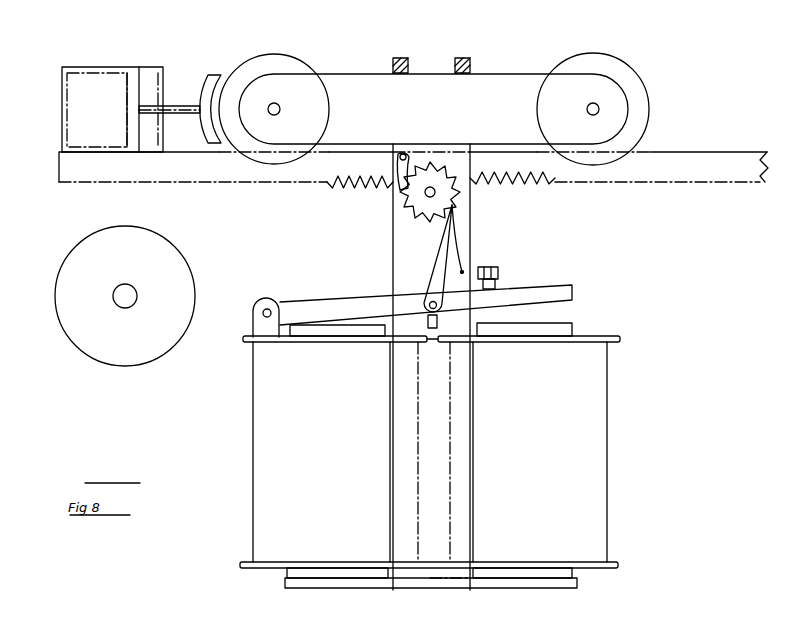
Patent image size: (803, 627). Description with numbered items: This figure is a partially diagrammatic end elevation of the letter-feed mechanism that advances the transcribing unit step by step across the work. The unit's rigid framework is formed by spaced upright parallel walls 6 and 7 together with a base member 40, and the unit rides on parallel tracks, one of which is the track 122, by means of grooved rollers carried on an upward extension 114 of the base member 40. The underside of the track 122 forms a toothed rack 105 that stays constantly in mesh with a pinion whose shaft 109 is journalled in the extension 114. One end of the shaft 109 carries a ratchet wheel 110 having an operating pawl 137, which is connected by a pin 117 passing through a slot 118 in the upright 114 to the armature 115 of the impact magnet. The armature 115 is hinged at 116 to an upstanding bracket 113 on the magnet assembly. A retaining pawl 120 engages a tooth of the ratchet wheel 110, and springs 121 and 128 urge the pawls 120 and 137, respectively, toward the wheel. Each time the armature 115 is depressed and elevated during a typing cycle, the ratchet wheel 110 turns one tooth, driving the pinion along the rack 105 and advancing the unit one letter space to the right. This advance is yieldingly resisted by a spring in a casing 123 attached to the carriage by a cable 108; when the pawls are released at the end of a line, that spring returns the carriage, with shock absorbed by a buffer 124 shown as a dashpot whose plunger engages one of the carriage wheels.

The buffer 124 is at (110, 72).
The upright parallel wall 7 is at (405, 58).
The upright parallel wall 6 is at (459, 58).
The track 122 is at (693, 158).
The retaining pawl 120 is at (408, 161).
The spring 121 is at (397, 185).
The ratchet wheel 110 is at (445, 198).
The shaft 109 is at (425, 195).
The toothed rack 105 is at (533, 188).
The cable 108 is at (400, 226).
The casing 123 is at (175, 257).
The spring 128 is at (458, 250).
The operating pawl 137 is at (438, 270).
The armature 115 is at (535, 290).
The hinge 116 is at (266, 310).
The pin 117 is at (436, 305).
The upstanding bracket 113 is at (262, 328).
The slot 118 is at (437, 322).
The upward extension 114 is at (465, 404).
The base member 40 is at (293, 580).